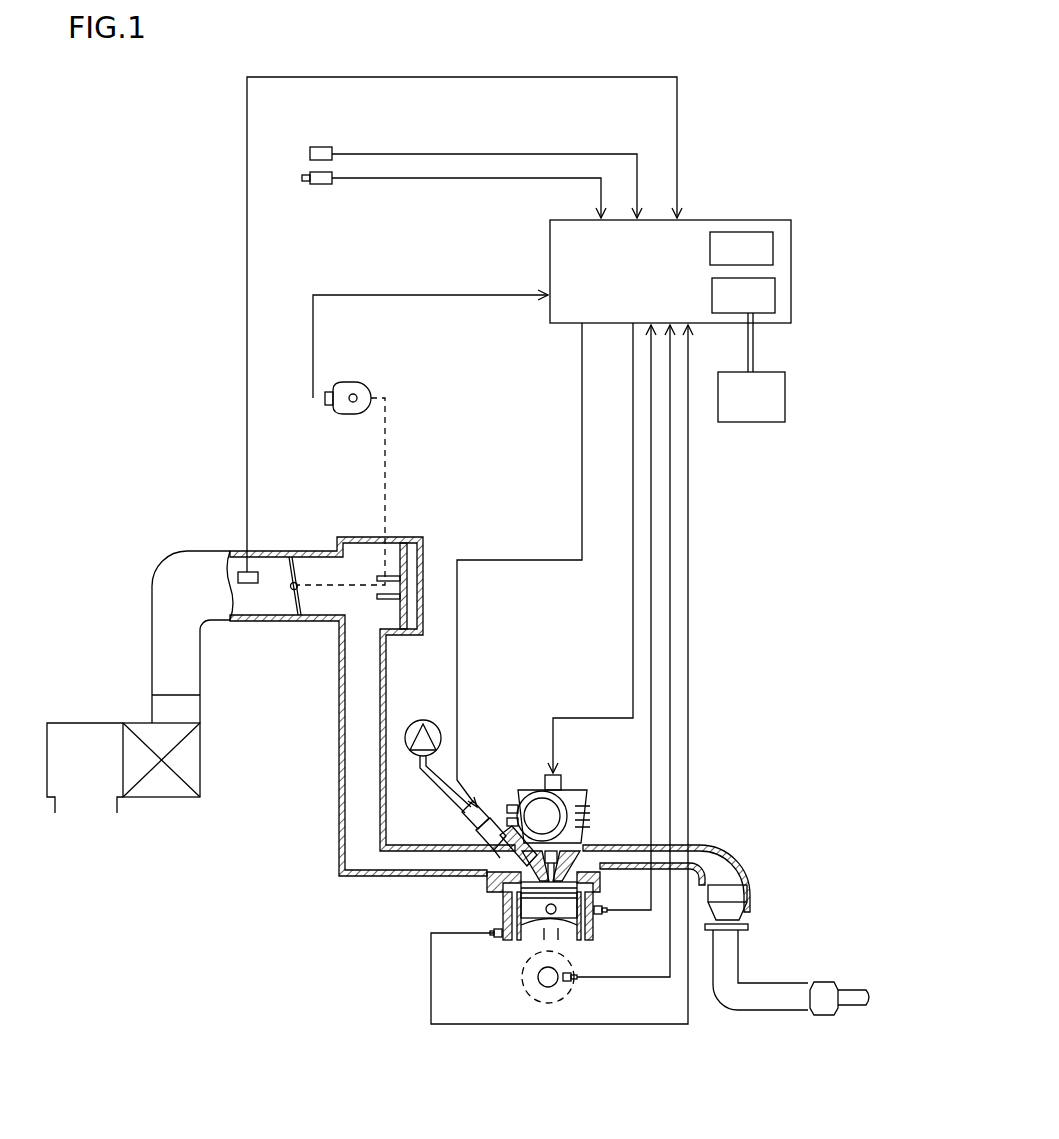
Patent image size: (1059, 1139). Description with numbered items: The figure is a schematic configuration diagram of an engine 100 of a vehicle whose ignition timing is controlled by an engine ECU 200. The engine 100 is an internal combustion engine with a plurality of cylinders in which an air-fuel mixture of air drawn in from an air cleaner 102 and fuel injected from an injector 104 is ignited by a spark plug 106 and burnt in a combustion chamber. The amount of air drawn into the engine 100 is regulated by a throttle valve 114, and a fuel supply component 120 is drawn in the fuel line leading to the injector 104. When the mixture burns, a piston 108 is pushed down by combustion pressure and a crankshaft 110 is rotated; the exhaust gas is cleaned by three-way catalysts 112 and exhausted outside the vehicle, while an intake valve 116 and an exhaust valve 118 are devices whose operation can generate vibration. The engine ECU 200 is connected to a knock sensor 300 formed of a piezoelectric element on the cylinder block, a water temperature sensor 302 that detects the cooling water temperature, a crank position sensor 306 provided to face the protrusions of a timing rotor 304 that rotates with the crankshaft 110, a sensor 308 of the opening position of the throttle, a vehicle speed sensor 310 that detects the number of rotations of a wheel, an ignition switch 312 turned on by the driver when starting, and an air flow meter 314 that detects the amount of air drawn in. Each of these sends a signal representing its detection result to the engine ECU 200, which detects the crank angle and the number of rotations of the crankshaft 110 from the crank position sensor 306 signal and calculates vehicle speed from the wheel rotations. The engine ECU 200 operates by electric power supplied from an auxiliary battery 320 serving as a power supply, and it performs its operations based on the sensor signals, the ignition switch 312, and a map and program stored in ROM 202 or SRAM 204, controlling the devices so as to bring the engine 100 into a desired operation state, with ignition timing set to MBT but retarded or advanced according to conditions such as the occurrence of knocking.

The engine 100 is at (470, 898).
The air cleaner 102 is at (163, 800).
The injector 104 is at (487, 824).
The spark plug 106 is at (562, 787).
The piston 108 is at (527, 940).
The crankshaft 110 is at (532, 995).
The three-way catalysts 112 is at (752, 880).
The throttle valve 114 is at (287, 596).
The intake valve 116 is at (487, 860).
The exhaust valve 118 is at (585, 857).
The fuel pump 120 is at (422, 709).
The engine ECU 200 is at (738, 220).
The ROM 202 is at (776, 249).
The SRAM 204 is at (778, 296).
The knock sensor 300 is at (498, 937).
The water temperature sensor 302 is at (591, 915).
The timing rotor 304 is at (554, 988).
The crank position sensor 306 is at (576, 983).
The sensor of an opening position of throttle 308 is at (361, 384).
The vehicle speed sensor 310 is at (323, 147).
The ignition switch 312 is at (329, 186).
The air flow meter 314 is at (260, 551).
The auxiliary battery 320 is at (787, 401).